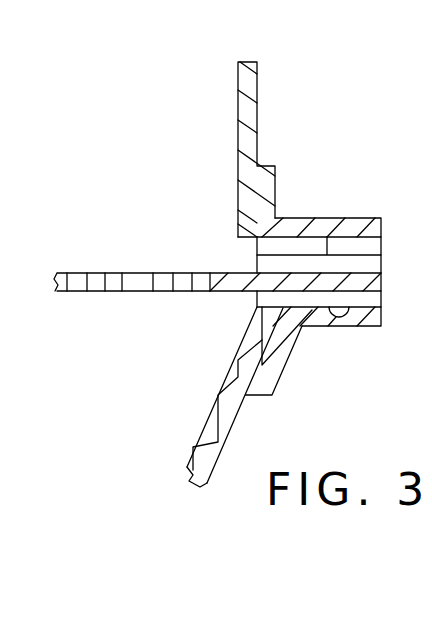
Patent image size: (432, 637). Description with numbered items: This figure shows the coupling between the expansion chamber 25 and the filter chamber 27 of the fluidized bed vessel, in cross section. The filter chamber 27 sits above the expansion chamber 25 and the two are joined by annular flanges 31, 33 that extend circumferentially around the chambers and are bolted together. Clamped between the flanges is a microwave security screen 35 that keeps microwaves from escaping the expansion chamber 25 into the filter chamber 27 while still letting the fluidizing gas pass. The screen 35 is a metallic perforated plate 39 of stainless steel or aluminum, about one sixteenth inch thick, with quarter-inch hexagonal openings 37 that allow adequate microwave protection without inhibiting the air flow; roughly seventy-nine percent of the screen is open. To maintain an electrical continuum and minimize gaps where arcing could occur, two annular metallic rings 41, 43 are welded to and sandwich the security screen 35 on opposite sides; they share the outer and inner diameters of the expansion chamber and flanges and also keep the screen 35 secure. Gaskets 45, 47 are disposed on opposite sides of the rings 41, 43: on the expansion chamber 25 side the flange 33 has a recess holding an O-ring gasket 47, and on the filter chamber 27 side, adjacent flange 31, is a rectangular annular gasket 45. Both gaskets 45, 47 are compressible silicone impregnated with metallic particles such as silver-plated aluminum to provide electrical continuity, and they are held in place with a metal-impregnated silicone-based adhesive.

The expansion chamber 25 is at (220, 451).
The filter chamber 27 is at (260, 141).
The annular flange 31 is at (328, 217).
The annular flange 33 is at (382, 315).
The microwave security screen 35 is at (90, 270).
The openings 37 is at (164, 295).
The perforated plate 39 is at (232, 295).
The metallic ring 41 is at (382, 262).
The metallic ring 43 is at (382, 297).
The rectangular annular gasket 45 is at (382, 240).
The O-ring gasket 47 is at (340, 320).